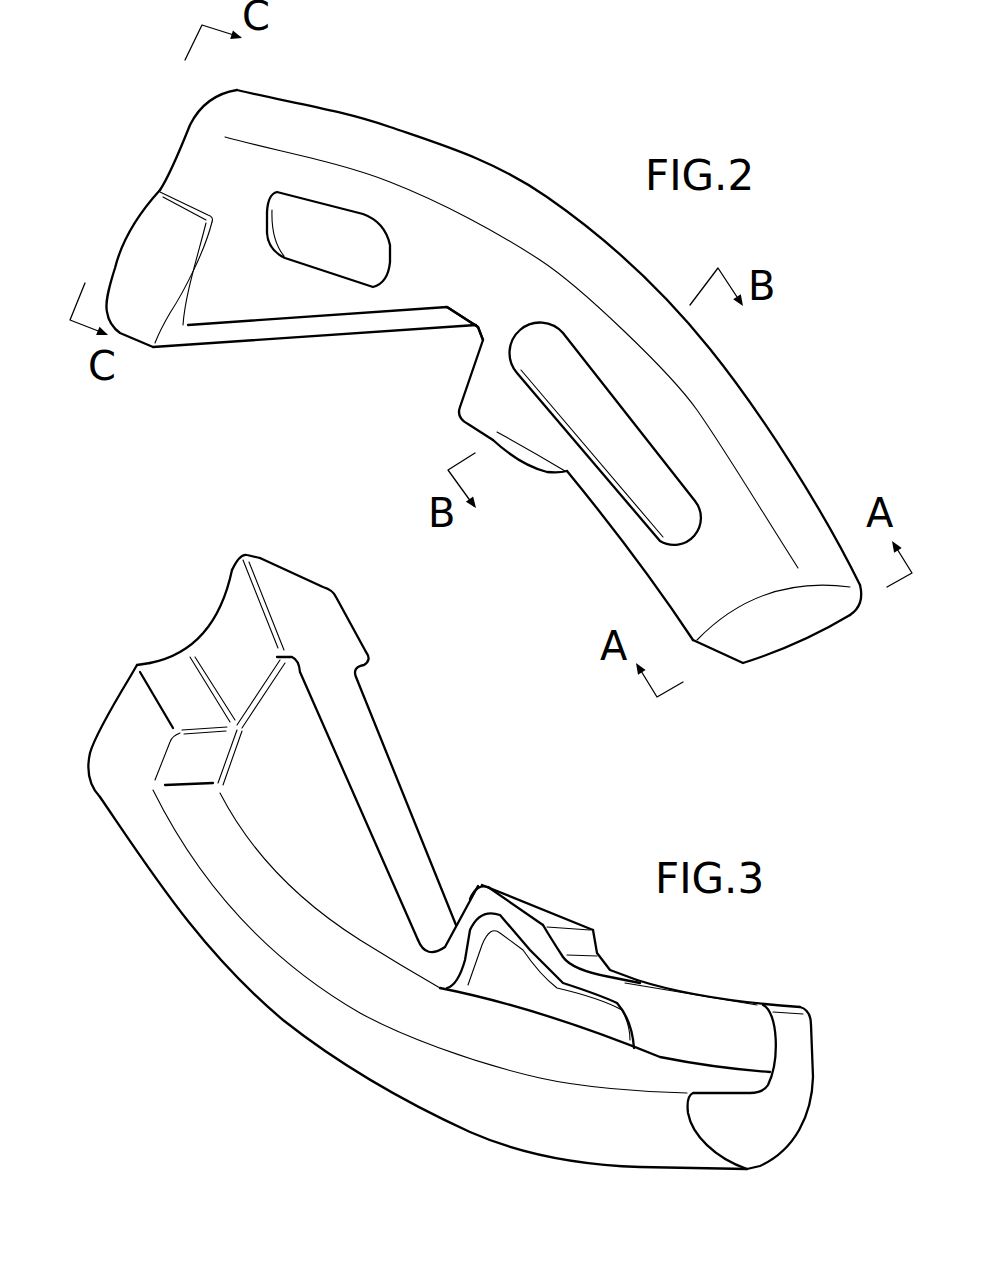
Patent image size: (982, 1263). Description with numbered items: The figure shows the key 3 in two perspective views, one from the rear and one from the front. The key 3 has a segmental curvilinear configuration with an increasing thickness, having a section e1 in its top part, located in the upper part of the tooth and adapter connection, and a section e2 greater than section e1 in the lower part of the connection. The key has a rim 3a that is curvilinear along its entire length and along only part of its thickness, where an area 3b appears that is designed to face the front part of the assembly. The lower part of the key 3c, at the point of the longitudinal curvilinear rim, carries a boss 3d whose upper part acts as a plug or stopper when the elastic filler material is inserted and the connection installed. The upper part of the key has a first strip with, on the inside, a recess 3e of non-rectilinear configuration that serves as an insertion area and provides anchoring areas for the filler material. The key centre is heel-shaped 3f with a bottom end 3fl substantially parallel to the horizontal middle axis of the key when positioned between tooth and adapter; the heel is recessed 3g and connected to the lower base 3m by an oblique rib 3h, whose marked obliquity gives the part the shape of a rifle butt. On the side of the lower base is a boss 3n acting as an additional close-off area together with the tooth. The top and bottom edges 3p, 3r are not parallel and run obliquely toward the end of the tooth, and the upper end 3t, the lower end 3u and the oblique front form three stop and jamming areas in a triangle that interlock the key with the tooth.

In FIG. 2, the key 3 is at (545, 193).
In FIG. 3, the rim 3a is at (316, 1047).
In FIG. 3, the area 3b is at (677, 990).
In FIG. 3, the lower part of the key 3c is at (208, 627).
In FIG. 3, the boss 3d is at (140, 673).
In FIG. 3, the recess 3e is at (583, 950).
In FIG. 2, the heel-shaped key centre 3f is at (497, 433).
In FIG. 3, the heel-shaped key centre 3f is at (537, 907).
In FIG. 3, the bottom end 3fl is at (462, 897).
In FIG. 2, the recess of the heel 3g is at (480, 333).
In FIG. 3, the recess of the heel 3g is at (435, 935).
In FIG. 3, the oblique rib 3h is at (377, 763).
In FIG. 3, the lower base 3m is at (182, 684).
In FIG. 2, the boss 3n is at (118, 257).
In FIG. 2, the top edge 3p is at (857, 563).
In FIG. 2, the bottom edge 3r is at (160, 192).
In FIG. 3, the upper end 3t is at (747, 1170).
In FIG. 3, the lower end 3u is at (90, 760).
In FIG. 2, the section e1 is at (795, 643).
In FIG. 3, the section e1 is at (799, 1000).
In FIG. 2, the section e2 is at (182, 122).
In FIG. 3, the section e2 is at (226, 565).